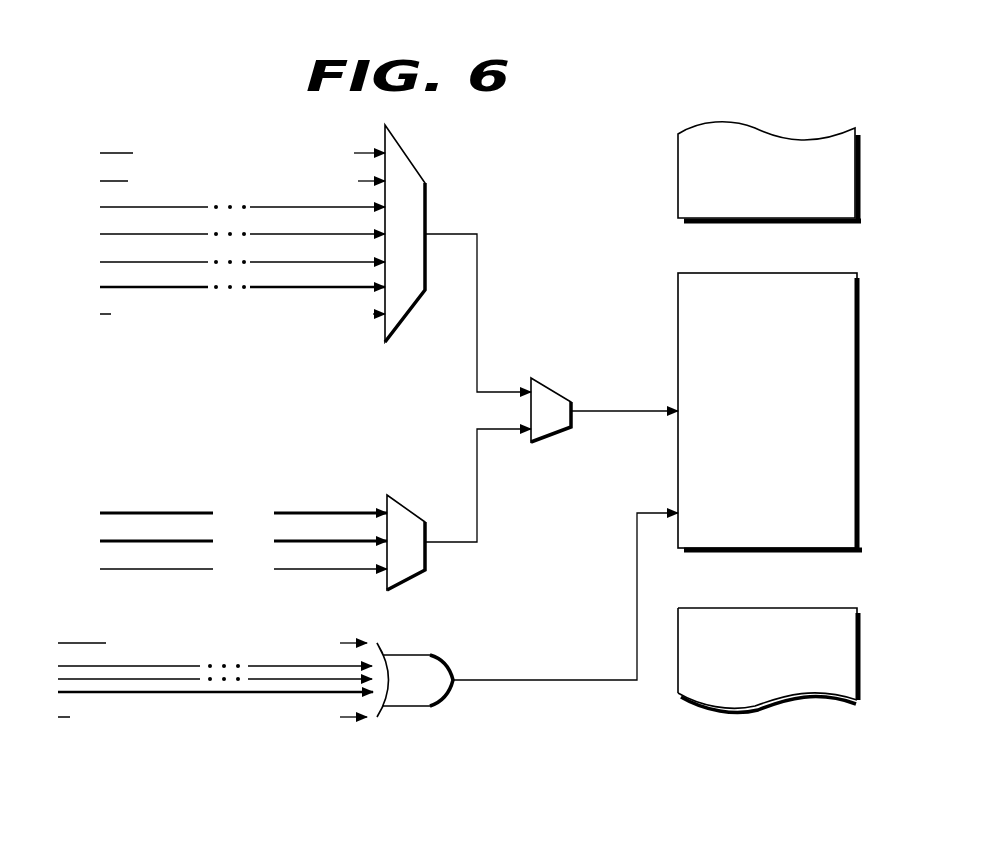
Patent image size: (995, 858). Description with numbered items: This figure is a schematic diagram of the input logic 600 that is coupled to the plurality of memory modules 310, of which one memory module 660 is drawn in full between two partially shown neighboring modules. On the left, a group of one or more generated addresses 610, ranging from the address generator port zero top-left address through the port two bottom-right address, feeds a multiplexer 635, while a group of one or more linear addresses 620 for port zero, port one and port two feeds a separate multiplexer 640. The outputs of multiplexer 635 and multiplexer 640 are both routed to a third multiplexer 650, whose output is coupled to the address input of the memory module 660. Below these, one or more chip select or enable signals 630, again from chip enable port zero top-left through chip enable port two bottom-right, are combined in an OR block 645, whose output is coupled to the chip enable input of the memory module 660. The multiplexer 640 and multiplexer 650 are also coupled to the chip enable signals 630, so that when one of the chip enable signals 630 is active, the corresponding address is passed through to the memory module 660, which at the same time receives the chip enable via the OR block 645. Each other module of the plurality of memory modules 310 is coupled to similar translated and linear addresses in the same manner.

The input logic 600 is at (184, 88).
The generated addresses 610 is at (100, 147).
The linear addresses 620 is at (100, 502).
The chip enable signals 630 is at (55, 636).
The multiplexer 635 is at (405, 328).
The multiplexer 640 is at (410, 580).
The OR block 645 is at (410, 706).
The multiplexer 650 is at (553, 436).
The memory module 660 is at (843, 553).
The plurality of memory modules 310 is at (863, 724).